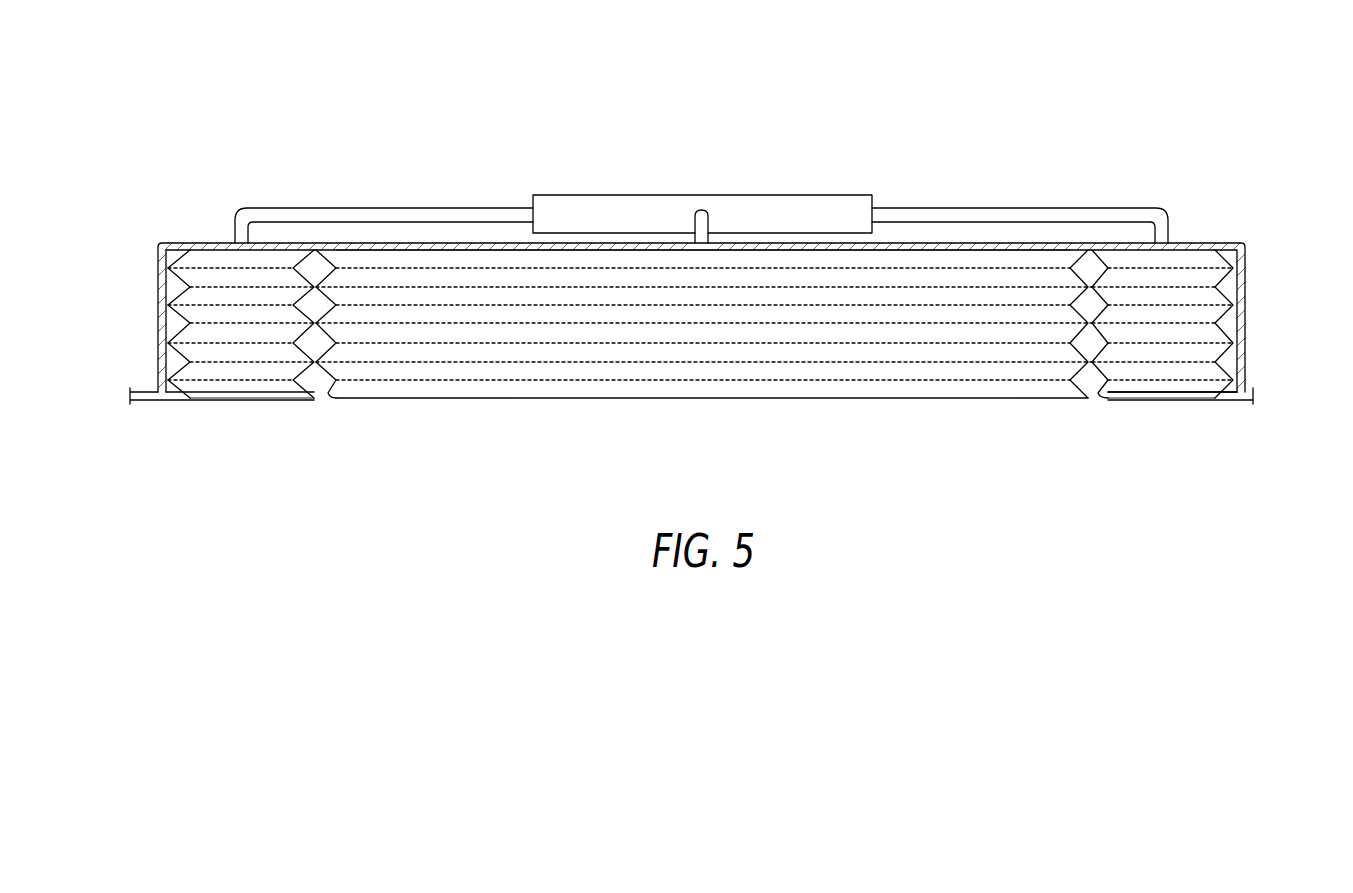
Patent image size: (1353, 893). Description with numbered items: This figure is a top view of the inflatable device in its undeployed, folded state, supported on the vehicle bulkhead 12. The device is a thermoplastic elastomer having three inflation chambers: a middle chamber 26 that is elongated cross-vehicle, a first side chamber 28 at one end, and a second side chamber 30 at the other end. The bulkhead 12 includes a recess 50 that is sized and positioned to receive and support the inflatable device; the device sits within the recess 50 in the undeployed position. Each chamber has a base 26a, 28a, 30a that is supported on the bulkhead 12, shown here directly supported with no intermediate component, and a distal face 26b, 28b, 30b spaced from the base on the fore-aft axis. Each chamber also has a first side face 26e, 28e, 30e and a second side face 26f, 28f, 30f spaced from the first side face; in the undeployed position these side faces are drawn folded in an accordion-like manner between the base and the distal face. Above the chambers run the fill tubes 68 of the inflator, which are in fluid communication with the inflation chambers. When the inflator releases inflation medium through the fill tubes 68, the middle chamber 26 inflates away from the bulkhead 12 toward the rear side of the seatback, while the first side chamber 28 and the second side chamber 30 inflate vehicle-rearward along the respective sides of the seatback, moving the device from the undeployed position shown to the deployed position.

The bulkhead 12 is at (149, 401).
The middle chamber 26 is at (827, 400).
The base 26a is at (977, 258).
The distal face 26b is at (910, 402).
The first side face 26e is at (320, 348).
The second side face 26f is at (1073, 334).
The first side chamber 28 is at (281, 400).
The base 28a is at (223, 262).
The distal face 28b is at (236, 401).
The first side face 28e is at (175, 346).
The second side face 28f is at (313, 283).
The second side chamber 30 is at (1123, 400).
The base 30a is at (1178, 258).
The distal face 30b is at (1170, 402).
The first side face 30e is at (1091, 301).
The second side face 30f is at (1219, 365).
The recess 50 is at (158, 300).
The fill tubes 68 is at (918, 207).